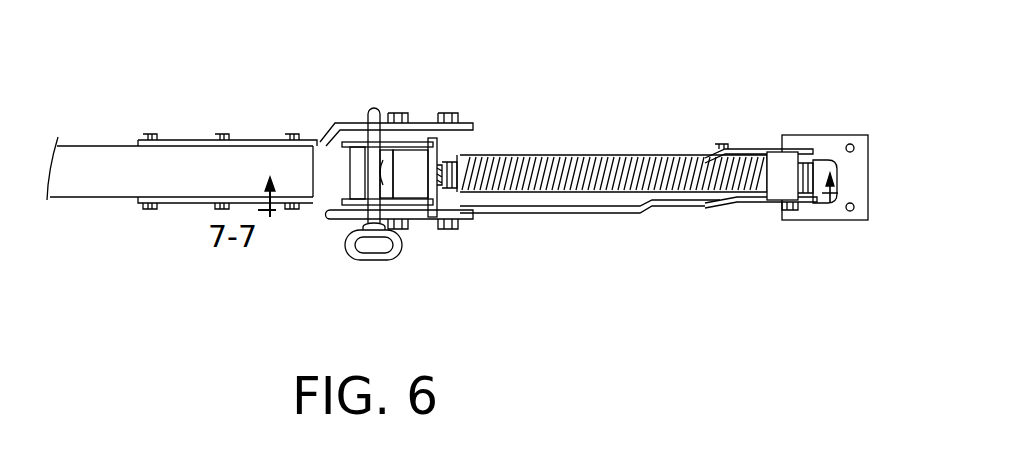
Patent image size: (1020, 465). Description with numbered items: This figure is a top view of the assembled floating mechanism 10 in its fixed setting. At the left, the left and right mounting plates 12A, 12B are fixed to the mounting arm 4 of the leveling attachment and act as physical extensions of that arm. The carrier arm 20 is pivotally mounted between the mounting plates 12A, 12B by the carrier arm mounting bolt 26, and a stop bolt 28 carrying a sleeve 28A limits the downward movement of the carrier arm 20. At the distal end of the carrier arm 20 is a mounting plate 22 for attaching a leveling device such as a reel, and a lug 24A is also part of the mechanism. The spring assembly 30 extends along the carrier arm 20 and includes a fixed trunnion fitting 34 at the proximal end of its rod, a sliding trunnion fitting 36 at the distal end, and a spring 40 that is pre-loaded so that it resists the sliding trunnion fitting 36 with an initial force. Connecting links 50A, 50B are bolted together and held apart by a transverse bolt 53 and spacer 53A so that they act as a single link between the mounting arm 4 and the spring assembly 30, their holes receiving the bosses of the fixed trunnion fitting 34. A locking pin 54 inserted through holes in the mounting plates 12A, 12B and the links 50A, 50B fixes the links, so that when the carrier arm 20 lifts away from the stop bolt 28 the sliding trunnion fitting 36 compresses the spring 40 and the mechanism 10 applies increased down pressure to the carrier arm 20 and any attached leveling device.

The mounting arm 4 is at (107, 183).
The floating mechanism 10 is at (520, 56).
The left mounting plate 12A is at (173, 210).
The right mounting plate 12B is at (173, 137).
The carrier arm 20 is at (832, 168).
The mounting plate 22 is at (850, 222).
The lug 24A is at (749, 208).
The carrier arm mounting bolt 26 is at (393, 222).
The stop bolt 28 is at (457, 228).
The sleeve 28A is at (460, 198).
The spring assembly 30 is at (600, 136).
The fixed trunnion fitting 34 is at (408, 162).
The sliding trunnion fitting 36 is at (783, 170).
The spring 40 is at (518, 153).
The connecting link 50A is at (343, 202).
The connecting link 50B is at (433, 144).
The transverse bolt 53 is at (348, 212).
The spacer 53A is at (343, 166).
The locking pin 54 is at (390, 260).